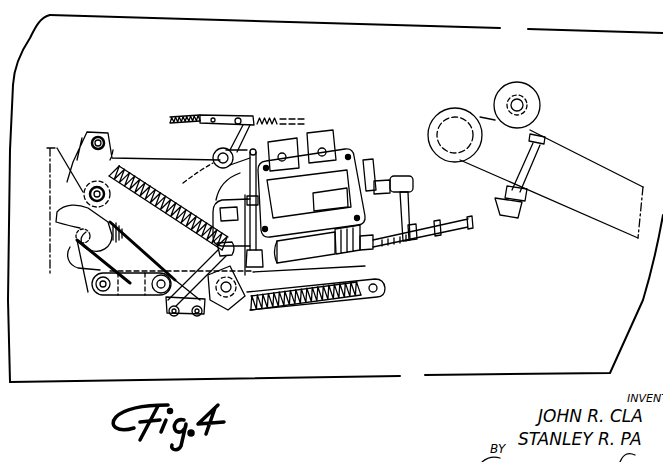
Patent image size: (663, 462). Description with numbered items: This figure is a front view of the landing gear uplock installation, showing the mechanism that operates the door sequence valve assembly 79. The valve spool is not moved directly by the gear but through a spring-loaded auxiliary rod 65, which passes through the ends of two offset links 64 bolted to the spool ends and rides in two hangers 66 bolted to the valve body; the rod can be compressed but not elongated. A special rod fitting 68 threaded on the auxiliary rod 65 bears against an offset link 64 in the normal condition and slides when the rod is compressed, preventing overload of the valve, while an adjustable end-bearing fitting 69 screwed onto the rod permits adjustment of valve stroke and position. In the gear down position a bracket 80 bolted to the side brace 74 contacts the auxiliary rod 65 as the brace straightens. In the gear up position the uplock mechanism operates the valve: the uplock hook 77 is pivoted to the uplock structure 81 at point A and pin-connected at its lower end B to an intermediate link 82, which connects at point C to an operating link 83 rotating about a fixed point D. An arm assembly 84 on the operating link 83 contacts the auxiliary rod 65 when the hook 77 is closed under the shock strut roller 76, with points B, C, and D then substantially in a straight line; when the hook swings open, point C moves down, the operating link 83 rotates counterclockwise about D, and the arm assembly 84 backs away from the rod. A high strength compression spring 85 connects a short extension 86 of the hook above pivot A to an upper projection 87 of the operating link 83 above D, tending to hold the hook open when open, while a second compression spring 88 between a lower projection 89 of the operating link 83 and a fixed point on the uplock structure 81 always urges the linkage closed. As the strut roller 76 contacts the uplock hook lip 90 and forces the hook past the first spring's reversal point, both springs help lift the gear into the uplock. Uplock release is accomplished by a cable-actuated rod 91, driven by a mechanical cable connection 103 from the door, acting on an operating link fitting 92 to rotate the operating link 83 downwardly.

The offset links 64 is at (408, 198).
The auxiliary rod 65 is at (367, 253).
The hangers 66 is at (375, 243).
The rod fitting 68 is at (415, 238).
The adjustable end-bearing fitting 69 is at (465, 232).
The side brace 74 is at (598, 168).
The shock strut roller 76 is at (72, 243).
The uplock hook 77 is at (83, 273).
The sequence valve assembly 79 is at (306, 190).
The bracket 80 is at (518, 217).
The uplock structure 81 is at (157, 160).
The intermediate link 82 is at (117, 308).
The operating link 83 is at (166, 307).
The arm assembly 84 is at (193, 275).
The compression spring 85 is at (215, 165).
The short extension 86 is at (115, 158).
The upper projection 87 is at (217, 250).
The second compression spring 88 is at (338, 307).
The lower projection 89 is at (235, 320).
The uplock hook lip 90 is at (58, 215).
The cable-actuated rod 91 is at (240, 176).
The operating link fitting 92 is at (270, 313).
The mechanical cable connection 103 is at (197, 107).
The pivot point A is at (90, 192).
The pin connection point B is at (87, 302).
The connection point C is at (148, 305).
The fixed pivot point D is at (203, 318).